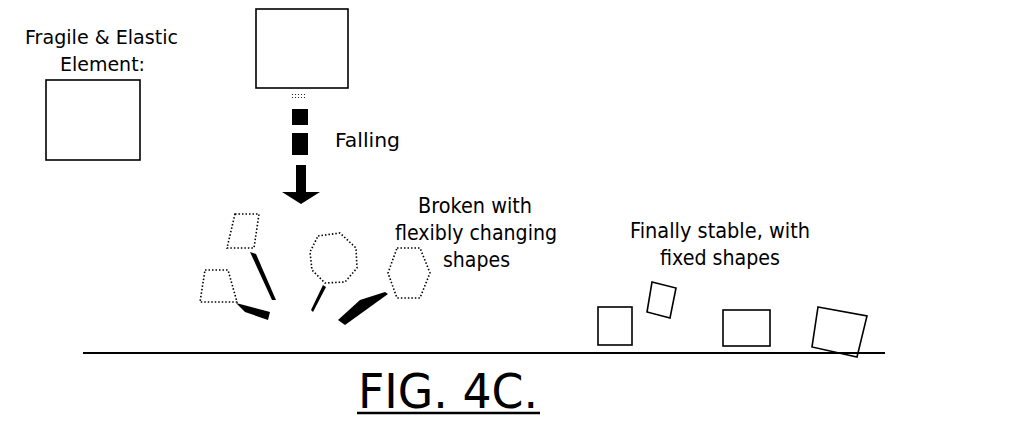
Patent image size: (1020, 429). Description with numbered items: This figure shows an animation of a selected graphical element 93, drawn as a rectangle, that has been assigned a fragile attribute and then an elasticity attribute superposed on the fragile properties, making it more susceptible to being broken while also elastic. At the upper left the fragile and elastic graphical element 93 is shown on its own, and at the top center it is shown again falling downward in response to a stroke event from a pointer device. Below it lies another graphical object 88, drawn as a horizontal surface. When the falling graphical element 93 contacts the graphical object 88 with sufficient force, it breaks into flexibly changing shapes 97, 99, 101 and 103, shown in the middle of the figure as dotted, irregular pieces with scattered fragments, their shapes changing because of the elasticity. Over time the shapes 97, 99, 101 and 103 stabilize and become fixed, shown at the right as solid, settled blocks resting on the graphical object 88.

The graphical object 88 is at (118, 353).
The graphical element 93 is at (117, 160).
The flexibly changing shape 97 is at (213, 302).
The flexibly changing shape 99 is at (232, 228).
The flexibly changing shape 101 is at (331, 235).
The flexibly changing shape 103 is at (405, 298).